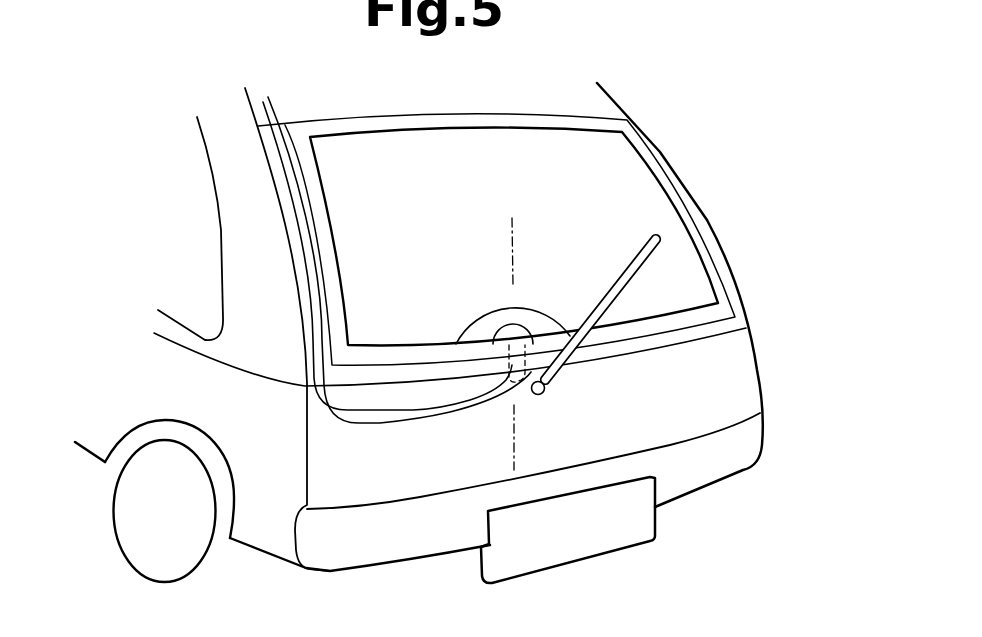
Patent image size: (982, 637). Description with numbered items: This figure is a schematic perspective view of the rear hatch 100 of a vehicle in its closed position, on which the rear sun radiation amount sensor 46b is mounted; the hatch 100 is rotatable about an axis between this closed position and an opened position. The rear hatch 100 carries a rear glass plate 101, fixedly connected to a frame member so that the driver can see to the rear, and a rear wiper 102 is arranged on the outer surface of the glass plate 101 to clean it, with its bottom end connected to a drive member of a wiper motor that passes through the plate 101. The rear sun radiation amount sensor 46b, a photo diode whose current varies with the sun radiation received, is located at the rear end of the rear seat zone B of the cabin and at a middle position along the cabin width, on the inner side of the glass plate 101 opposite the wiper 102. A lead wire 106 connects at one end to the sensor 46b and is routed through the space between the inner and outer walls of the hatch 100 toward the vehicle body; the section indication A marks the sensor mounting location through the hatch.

The rear hatch 100 is at (695, 393).
The rear glass plate 101 is at (623, 228).
The rear wiper 102 is at (644, 270).
The lead wire 106 is at (378, 423).
The rear sun radiation amount sensor 46b is at (493, 323).
The section line A- A is at (513, 232).
The rear seat zone B is at (582, 216).